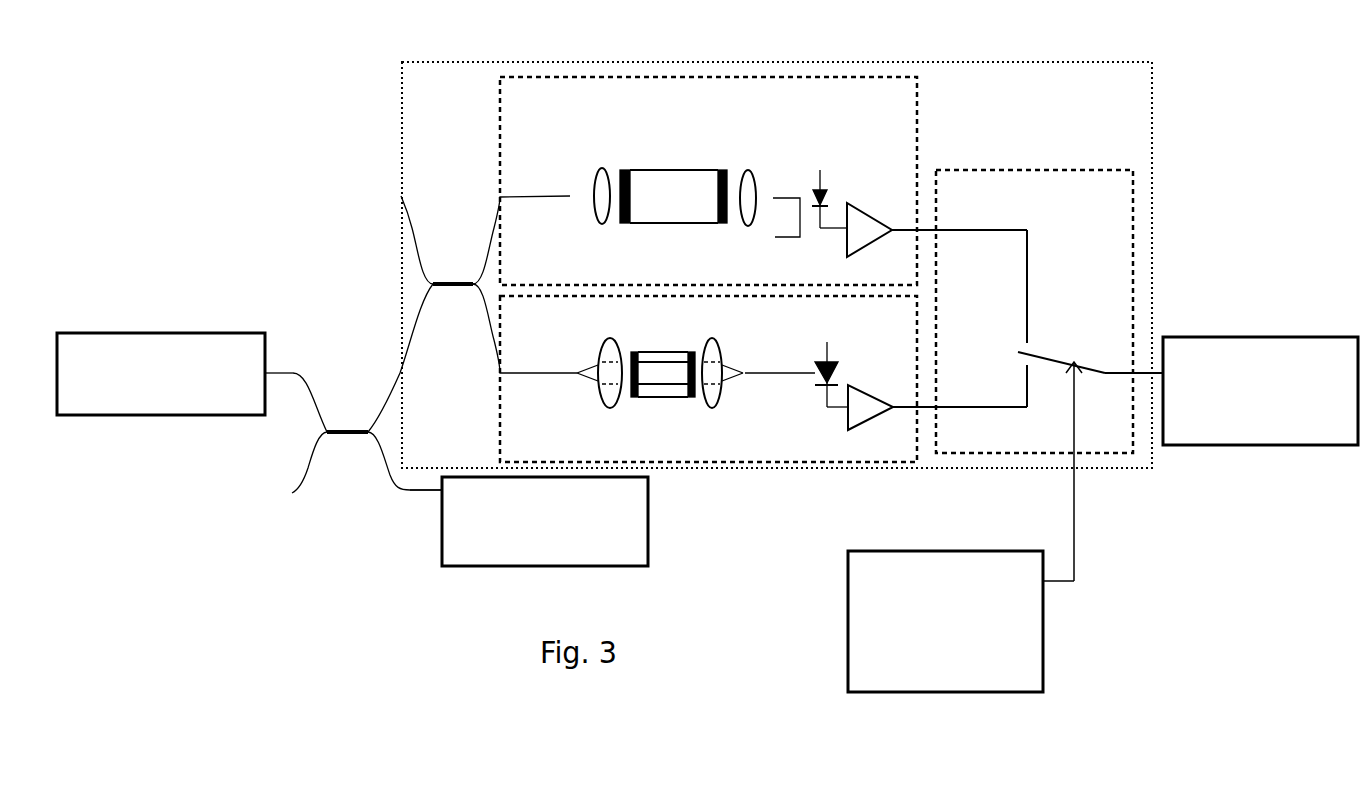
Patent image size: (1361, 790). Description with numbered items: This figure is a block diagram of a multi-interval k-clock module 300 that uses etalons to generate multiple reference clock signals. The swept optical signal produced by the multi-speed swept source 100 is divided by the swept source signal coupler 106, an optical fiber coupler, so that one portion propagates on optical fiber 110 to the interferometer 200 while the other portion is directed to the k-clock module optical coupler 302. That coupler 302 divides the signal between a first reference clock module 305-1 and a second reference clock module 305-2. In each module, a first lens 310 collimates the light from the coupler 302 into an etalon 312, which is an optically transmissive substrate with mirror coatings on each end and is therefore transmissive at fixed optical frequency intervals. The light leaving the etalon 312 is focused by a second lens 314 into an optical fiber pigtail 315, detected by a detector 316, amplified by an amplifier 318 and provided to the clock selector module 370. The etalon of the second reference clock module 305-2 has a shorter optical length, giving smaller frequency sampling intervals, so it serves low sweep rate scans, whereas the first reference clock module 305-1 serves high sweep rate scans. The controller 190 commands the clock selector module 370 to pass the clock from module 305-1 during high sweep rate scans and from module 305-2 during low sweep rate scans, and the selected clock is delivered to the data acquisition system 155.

The multi-speed swept source 100 is at (178, 407).
The swept source signal coupler 106 is at (349, 428).
The optical fiber 110 is at (420, 491).
The interferometer 200 is at (561, 544).
The multi-interval k-clock module 300 is at (1143, 95).
The k-clock module optical coupler 302 is at (462, 280).
The first reference clock module 305-1 is at (908, 450).
The second reference clock module 305-2 is at (908, 273).
The first lens 310 is at (597, 177).
The etalon 312 is at (682, 170).
The second lens 314 is at (748, 170).
The optical fiber pigtail 315 is at (762, 402).
The detector 316 is at (820, 176).
The amplifier 318 is at (870, 210).
The clock selector module 370 is at (1082, 228).
The data acquisition system 155 is at (1293, 337).
The controller 190 is at (1010, 666).